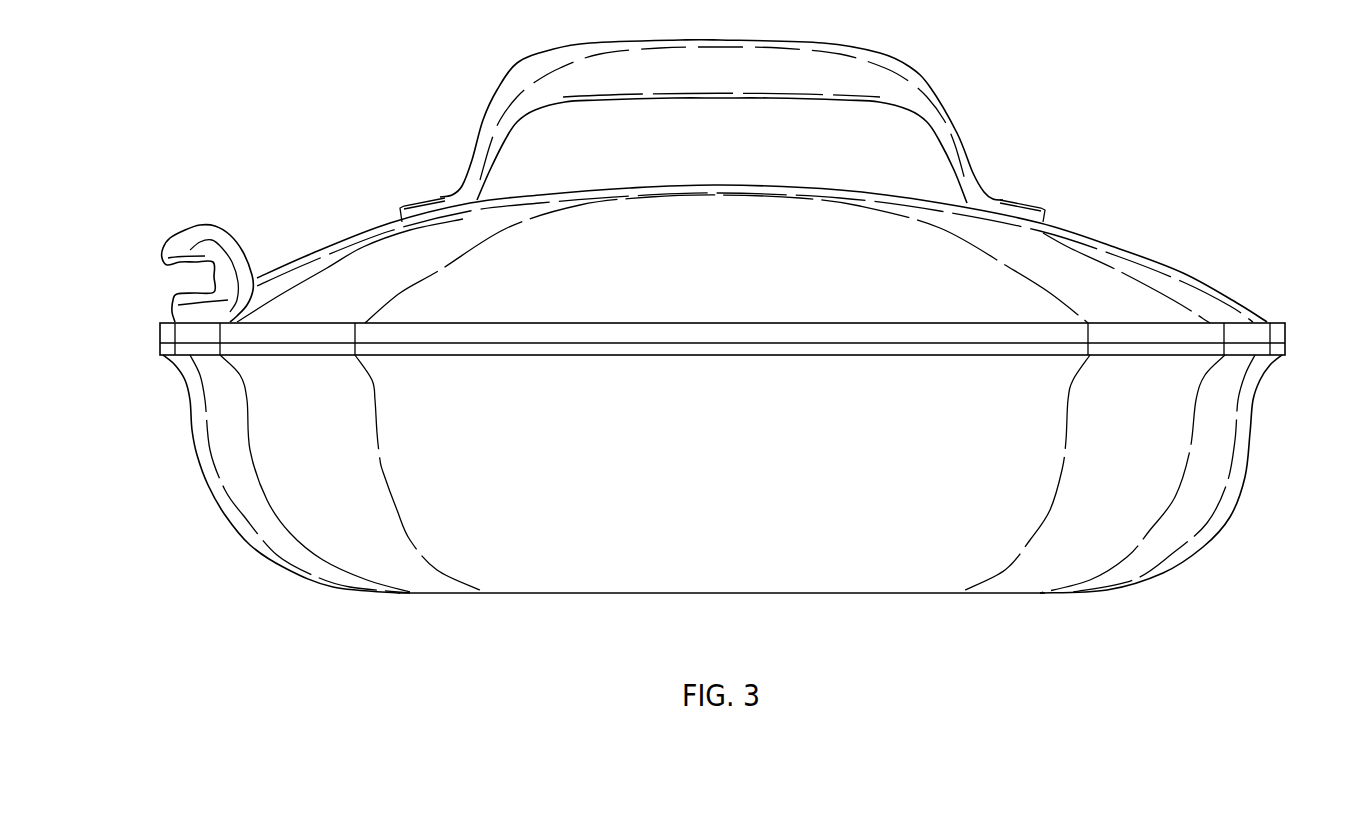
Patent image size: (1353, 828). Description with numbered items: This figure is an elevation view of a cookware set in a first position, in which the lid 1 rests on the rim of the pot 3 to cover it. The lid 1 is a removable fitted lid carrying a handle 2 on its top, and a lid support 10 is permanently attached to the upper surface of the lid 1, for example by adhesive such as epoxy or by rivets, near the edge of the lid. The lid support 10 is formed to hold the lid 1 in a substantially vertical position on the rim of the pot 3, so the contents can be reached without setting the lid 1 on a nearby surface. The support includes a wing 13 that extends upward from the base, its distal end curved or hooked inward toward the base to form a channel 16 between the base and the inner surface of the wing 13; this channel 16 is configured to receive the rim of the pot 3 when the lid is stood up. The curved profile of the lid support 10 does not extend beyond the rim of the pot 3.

The lid 1 is at (1182, 287).
The handle 2 is at (945, 103).
The pot 3 is at (1240, 465).
The lid support 10 is at (177, 310).
The wing 13 is at (196, 230).
The channel 16 is at (173, 280).